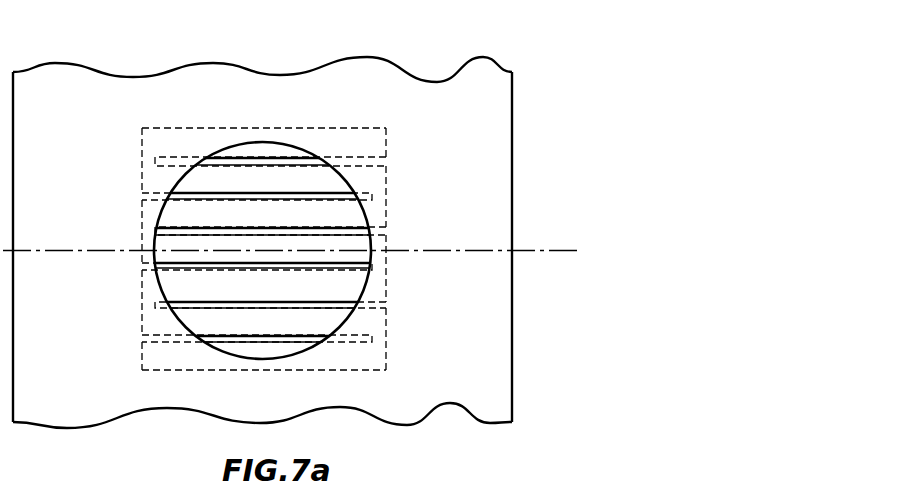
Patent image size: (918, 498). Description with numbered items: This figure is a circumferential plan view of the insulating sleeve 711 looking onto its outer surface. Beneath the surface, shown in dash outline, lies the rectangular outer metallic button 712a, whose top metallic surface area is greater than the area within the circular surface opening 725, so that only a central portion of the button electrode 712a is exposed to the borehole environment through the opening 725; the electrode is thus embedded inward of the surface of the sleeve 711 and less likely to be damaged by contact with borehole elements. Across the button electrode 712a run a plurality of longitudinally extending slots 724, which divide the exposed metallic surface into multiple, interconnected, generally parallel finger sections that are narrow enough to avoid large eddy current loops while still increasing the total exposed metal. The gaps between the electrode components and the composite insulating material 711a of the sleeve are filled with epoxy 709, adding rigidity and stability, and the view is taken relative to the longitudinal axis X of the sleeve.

The epoxy 709 is at (297, 343).
The insulating sleeve 711 is at (486, 377).
The composite insulating material 711a is at (485, 338).
The outer metallic button 712a is at (141, 357).
The slots 724 is at (141, 330).
The circular surface opening 725 is at (311, 154).
The axis X is at (557, 251).